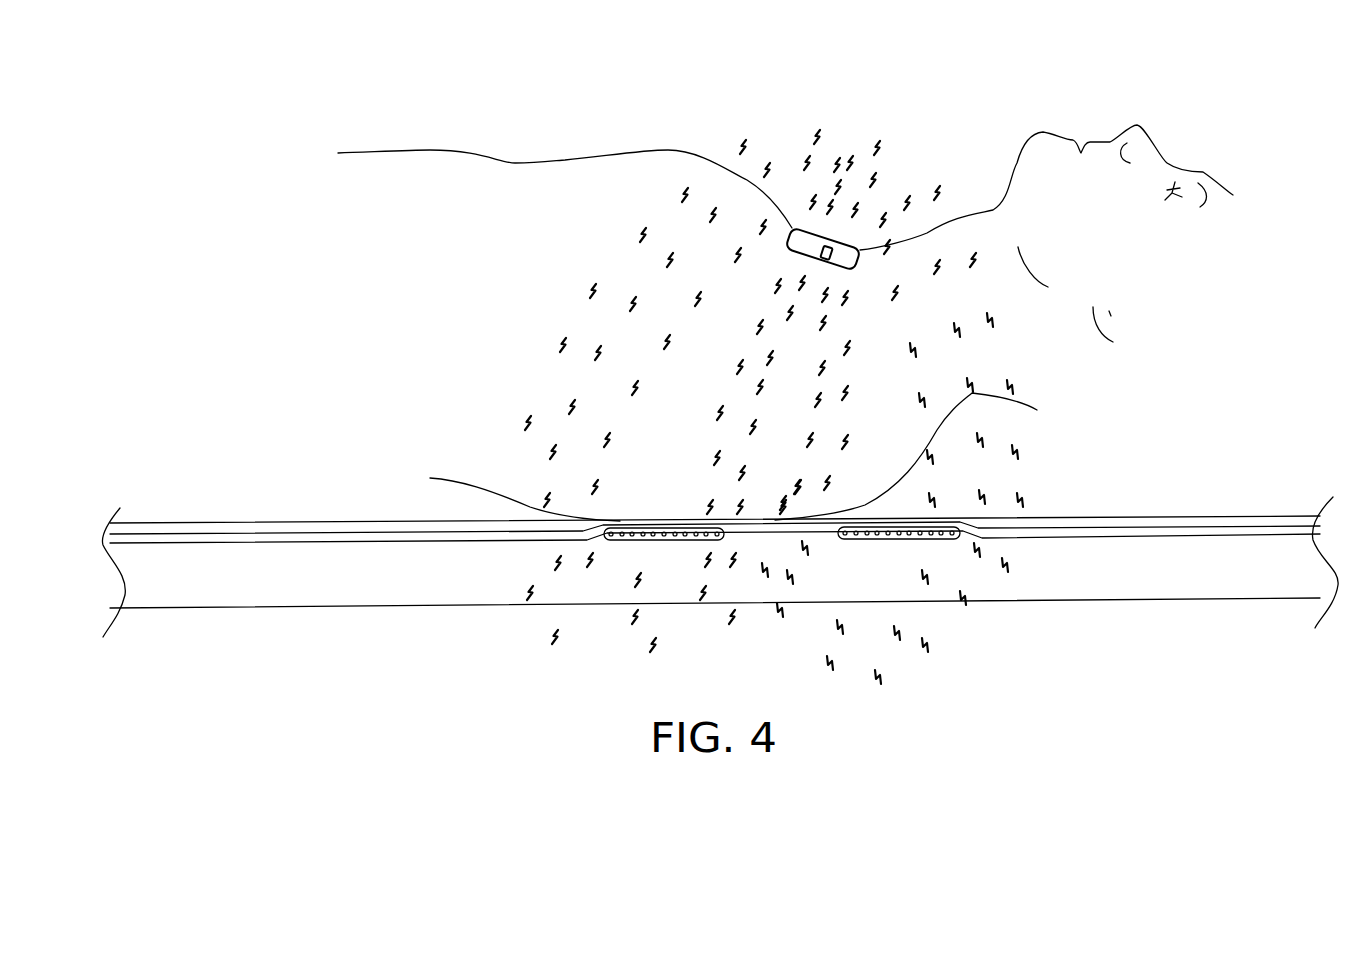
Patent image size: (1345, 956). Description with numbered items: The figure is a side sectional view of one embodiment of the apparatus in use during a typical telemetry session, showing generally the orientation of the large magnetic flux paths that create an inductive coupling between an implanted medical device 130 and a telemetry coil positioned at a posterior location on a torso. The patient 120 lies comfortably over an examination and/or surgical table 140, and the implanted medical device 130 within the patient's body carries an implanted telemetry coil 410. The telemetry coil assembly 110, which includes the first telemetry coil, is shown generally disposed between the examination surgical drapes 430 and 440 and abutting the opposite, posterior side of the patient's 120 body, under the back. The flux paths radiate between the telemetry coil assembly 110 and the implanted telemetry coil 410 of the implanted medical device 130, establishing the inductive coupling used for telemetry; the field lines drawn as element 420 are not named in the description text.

The telemetry coil assembly 110 is at (632, 553).
The patient 120 is at (442, 150).
The implanted medical device 130 is at (778, 212).
The examination and/or surgical table 140 is at (1180, 601).
The implanted telemetry coil 410 is at (846, 245).
The electromagnetic field lines 420 is at (560, 338).
The examination surgical drape 430 is at (226, 521).
The examination surgical drape 440 is at (236, 545).